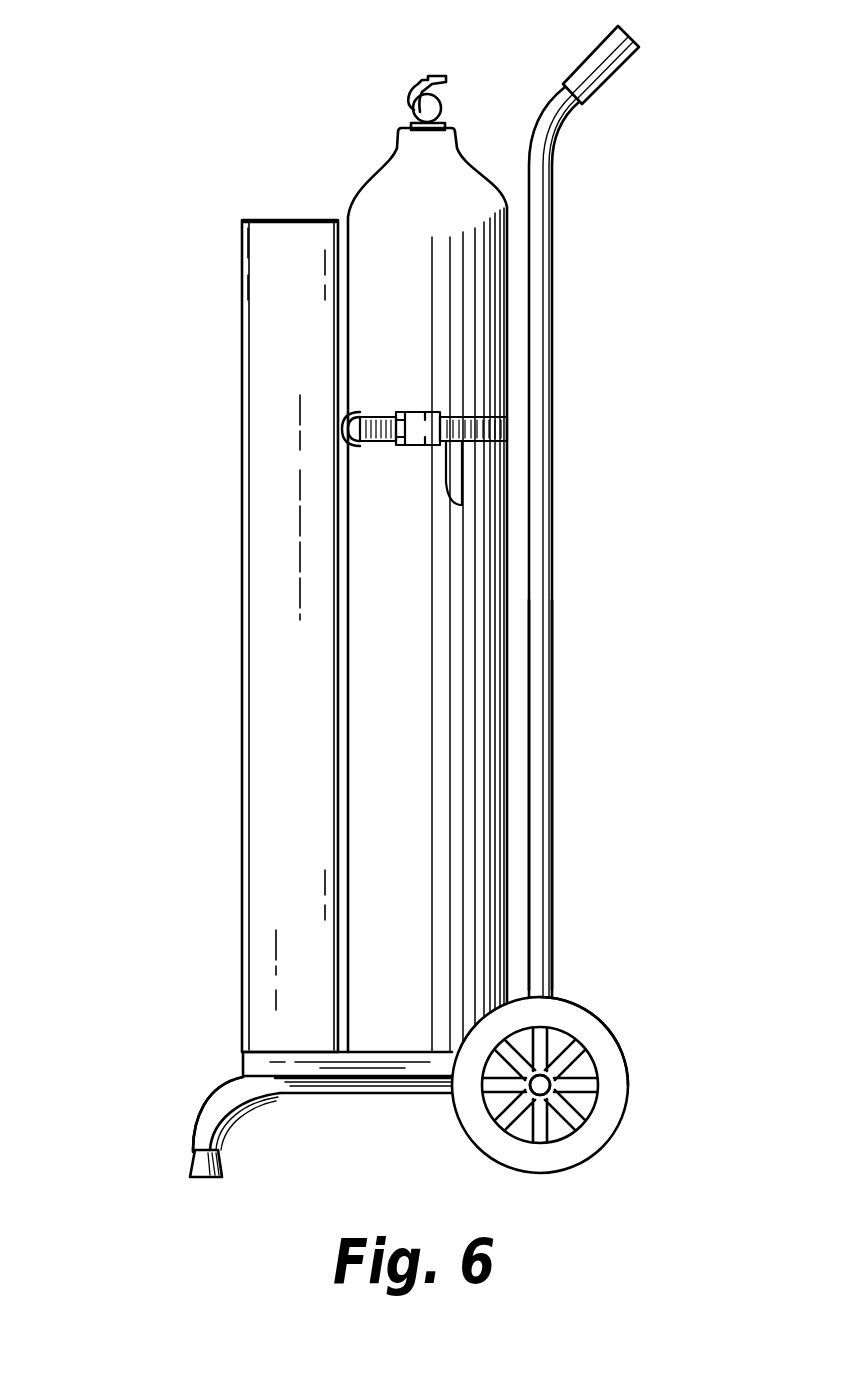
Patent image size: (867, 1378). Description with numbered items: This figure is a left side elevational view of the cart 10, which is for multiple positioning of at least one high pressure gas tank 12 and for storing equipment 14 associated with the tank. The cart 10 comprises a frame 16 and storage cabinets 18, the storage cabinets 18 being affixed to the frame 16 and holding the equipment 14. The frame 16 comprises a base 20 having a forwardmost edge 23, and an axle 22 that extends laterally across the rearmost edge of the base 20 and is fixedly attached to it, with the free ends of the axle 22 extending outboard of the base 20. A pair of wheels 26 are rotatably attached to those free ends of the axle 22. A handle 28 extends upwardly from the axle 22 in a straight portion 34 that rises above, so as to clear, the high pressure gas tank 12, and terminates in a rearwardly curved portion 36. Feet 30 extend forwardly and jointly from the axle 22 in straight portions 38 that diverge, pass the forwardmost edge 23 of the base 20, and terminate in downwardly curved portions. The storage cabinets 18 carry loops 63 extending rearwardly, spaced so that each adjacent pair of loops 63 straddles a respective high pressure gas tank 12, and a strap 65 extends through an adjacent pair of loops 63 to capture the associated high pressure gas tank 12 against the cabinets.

The cart 10 is at (158, 136).
The high pressure gas tank 12 is at (370, 177).
The equipment 14 is at (296, 342).
The frame 16 is at (347, 1095).
The storage cabinets 18 is at (270, 490).
The base 20 is at (400, 1094).
The axle 22 is at (551, 1085).
The forwardmost edge 23 is at (243, 1068).
The wheels 26 is at (601, 1015).
The handle 28 is at (553, 318).
The feet 30 is at (198, 1128).
The straight portion 34 is at (550, 595).
The rearwardly curved portion 36 is at (551, 98).
The straight portions 38 is at (280, 1094).
The loops 63 is at (364, 448).
The straps 65 is at (414, 405).